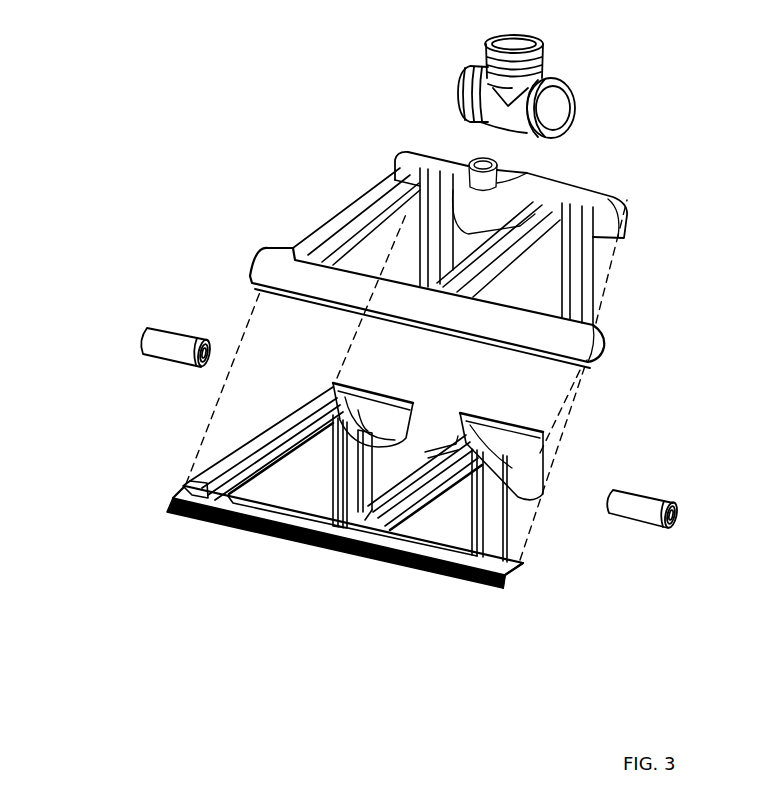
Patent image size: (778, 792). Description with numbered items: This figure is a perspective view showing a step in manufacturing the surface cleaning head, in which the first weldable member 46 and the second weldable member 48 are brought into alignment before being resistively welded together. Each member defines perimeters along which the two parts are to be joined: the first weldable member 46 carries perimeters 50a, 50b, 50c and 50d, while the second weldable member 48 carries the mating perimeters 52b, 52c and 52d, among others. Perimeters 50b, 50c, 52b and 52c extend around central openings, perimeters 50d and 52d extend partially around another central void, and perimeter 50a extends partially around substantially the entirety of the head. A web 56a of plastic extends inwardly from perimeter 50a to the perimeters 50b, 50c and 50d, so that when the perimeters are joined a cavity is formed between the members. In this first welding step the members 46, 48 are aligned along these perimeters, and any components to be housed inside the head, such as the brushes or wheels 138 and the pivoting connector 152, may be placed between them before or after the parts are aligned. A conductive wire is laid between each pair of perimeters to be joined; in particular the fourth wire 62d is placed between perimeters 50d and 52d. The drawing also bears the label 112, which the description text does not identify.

The filter cartridge support assembly 112 is at (98, 82).
The pivoting connector 152 is at (495, 116).
The second weldable member 48 is at (580, 328).
The perimeter 52b is at (347, 262).
The perimeter 52c is at (490, 291).
The perimeter 52d is at (452, 233).
The first weldable member 46 is at (460, 587).
The perimeter 50a is at (182, 487).
The perimeter 50b is at (278, 492).
The perimeter 50c is at (425, 532).
The perimeter 50d is at (372, 482).
The fourth wire 62d is at (382, 392).
The web 56a is at (522, 562).
The brush or wheel 138 is at (177, 355).